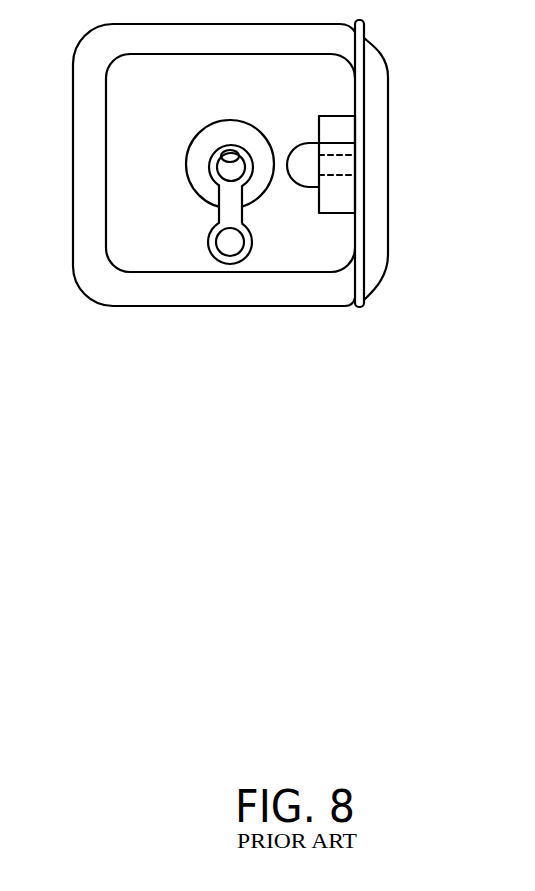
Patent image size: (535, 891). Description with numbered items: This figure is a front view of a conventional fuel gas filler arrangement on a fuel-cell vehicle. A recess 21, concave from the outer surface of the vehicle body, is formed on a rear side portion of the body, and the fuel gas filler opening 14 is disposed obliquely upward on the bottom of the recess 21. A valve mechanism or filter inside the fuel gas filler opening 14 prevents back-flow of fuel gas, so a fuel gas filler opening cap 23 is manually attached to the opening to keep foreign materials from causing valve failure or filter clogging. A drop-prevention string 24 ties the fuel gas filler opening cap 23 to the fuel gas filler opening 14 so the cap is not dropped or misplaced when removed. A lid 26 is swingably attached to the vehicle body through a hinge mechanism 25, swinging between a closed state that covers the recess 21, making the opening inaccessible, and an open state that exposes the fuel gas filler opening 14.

The fuel gas filler opening 14 is at (219, 235).
The recess 21 is at (73, 207).
The fuel gas filler opening cap 23 is at (228, 264).
The drop-prevention string 24 is at (200, 261).
The hinge mechanism 25 is at (325, 214).
The lid 26 is at (366, 226).